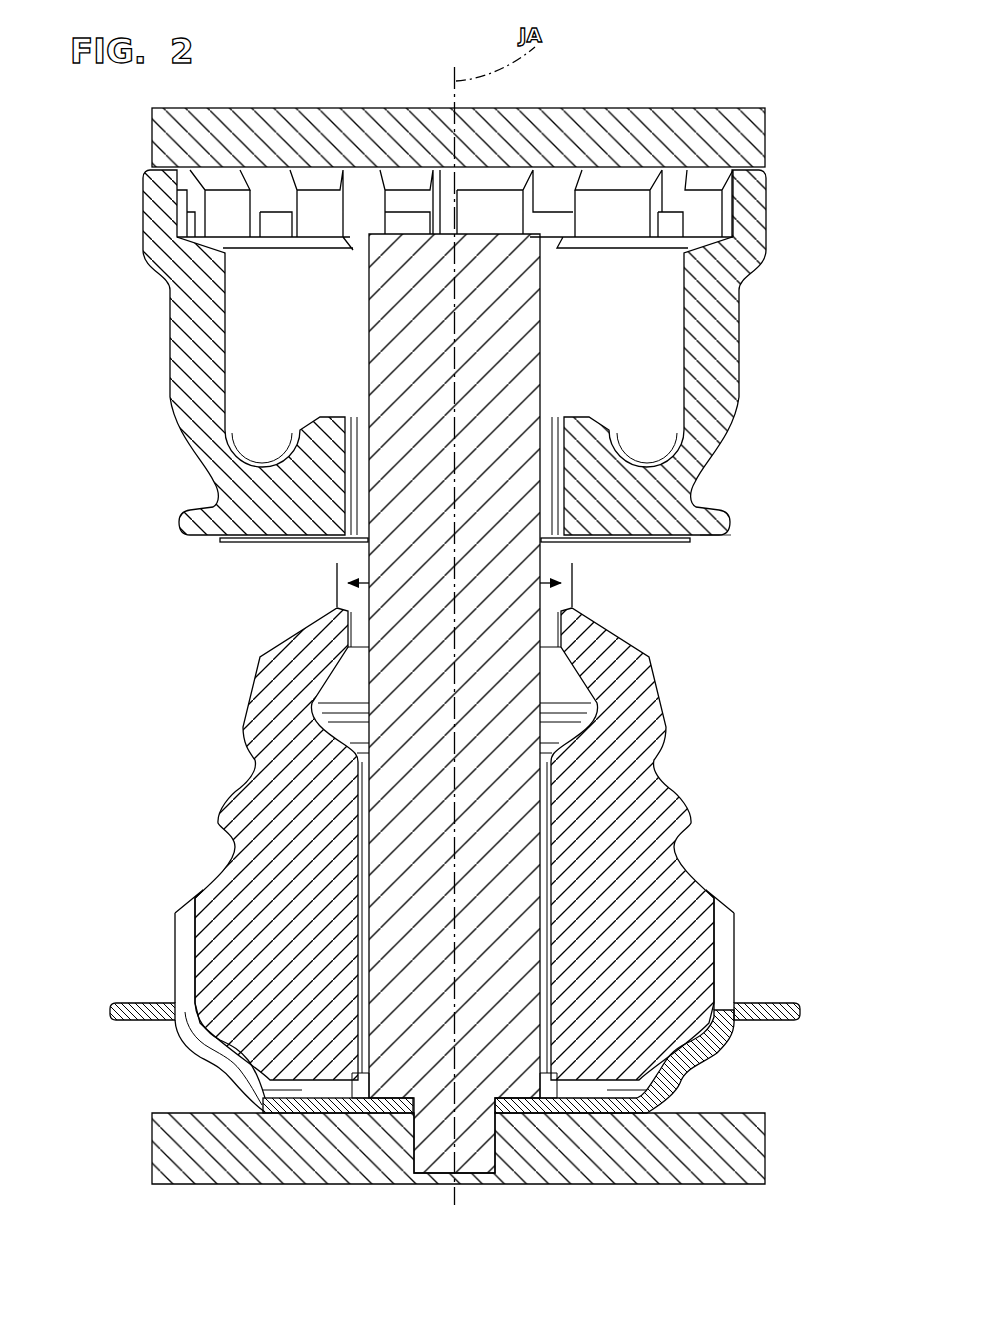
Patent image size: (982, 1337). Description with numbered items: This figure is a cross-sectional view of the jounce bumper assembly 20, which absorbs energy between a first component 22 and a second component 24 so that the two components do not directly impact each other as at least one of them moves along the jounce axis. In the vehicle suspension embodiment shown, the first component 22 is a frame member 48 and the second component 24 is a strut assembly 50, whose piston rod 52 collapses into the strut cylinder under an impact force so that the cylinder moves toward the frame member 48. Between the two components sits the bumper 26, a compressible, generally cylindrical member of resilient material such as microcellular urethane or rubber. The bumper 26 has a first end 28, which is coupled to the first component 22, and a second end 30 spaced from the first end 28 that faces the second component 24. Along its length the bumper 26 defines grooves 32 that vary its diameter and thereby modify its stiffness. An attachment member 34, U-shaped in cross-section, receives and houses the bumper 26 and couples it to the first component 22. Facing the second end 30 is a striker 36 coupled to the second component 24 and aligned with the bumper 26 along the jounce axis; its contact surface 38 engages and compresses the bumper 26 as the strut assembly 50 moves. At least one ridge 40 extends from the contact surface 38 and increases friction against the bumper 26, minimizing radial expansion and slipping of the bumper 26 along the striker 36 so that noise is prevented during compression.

The jounce bumper assembly 20 is at (145, 170).
The first component 22 is at (513, 1138).
The second component 24 is at (508, 120).
The bumper 26 is at (516, 848).
The first end 28 is at (775, 960).
The second end 30 is at (662, 620).
The grooves 32 is at (676, 756).
The attachment member 34 is at (738, 1035).
The striker 36 is at (742, 360).
The contact surface 38 is at (718, 547).
The ridge 40 is at (237, 542).
The frame member 48 is at (766, 1160).
The strut assembly 50 is at (765, 130).
The piston rod 52 is at (380, 560).